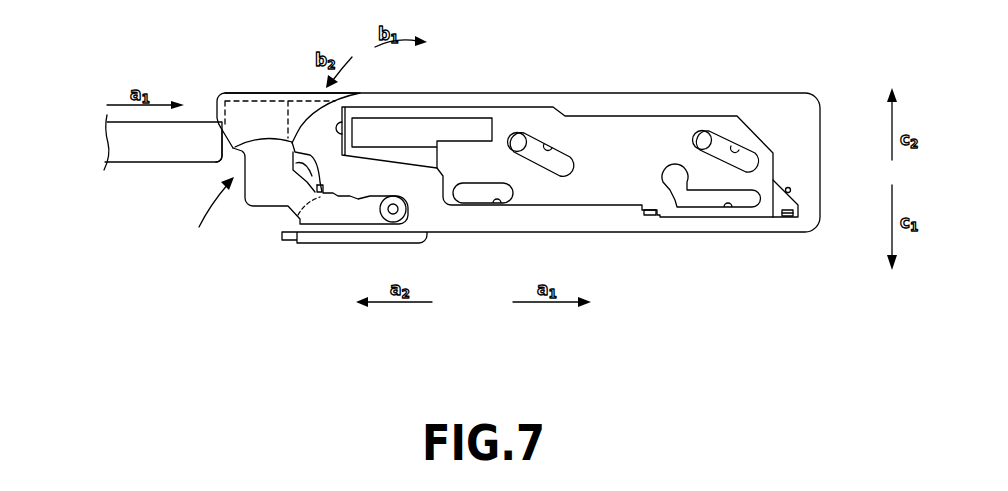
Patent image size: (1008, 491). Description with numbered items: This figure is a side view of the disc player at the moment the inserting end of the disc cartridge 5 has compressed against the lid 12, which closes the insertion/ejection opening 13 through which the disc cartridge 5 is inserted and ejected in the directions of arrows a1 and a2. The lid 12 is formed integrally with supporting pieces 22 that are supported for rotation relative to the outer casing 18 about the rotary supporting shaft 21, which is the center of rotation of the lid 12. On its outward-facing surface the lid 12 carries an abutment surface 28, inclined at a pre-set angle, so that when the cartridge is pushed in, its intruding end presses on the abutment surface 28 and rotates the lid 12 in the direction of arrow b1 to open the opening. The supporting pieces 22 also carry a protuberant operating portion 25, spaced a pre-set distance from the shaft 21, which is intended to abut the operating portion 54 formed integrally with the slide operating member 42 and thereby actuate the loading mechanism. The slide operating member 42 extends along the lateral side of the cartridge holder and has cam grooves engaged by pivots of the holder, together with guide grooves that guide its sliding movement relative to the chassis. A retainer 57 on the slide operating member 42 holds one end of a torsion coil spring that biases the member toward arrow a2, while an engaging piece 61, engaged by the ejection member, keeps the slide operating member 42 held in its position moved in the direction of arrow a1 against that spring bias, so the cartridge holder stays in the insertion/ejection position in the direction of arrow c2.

The disc cartridge 5 is at (124, 145).
The lid 12 is at (265, 110).
The insertion/ejection opening 13 is at (199, 213).
The outer casing 18 is at (798, 110).
The rotary supporting shaft 21 is at (404, 212).
The supporting piece 22 is at (263, 197).
The operating portion 25 is at (318, 177).
The abutment surface 28 is at (217, 143).
The slide operating member 42 is at (622, 137).
The operating portion 54 is at (342, 128).
The retainer 57 is at (650, 217).
The engaging piece 61 is at (788, 190).